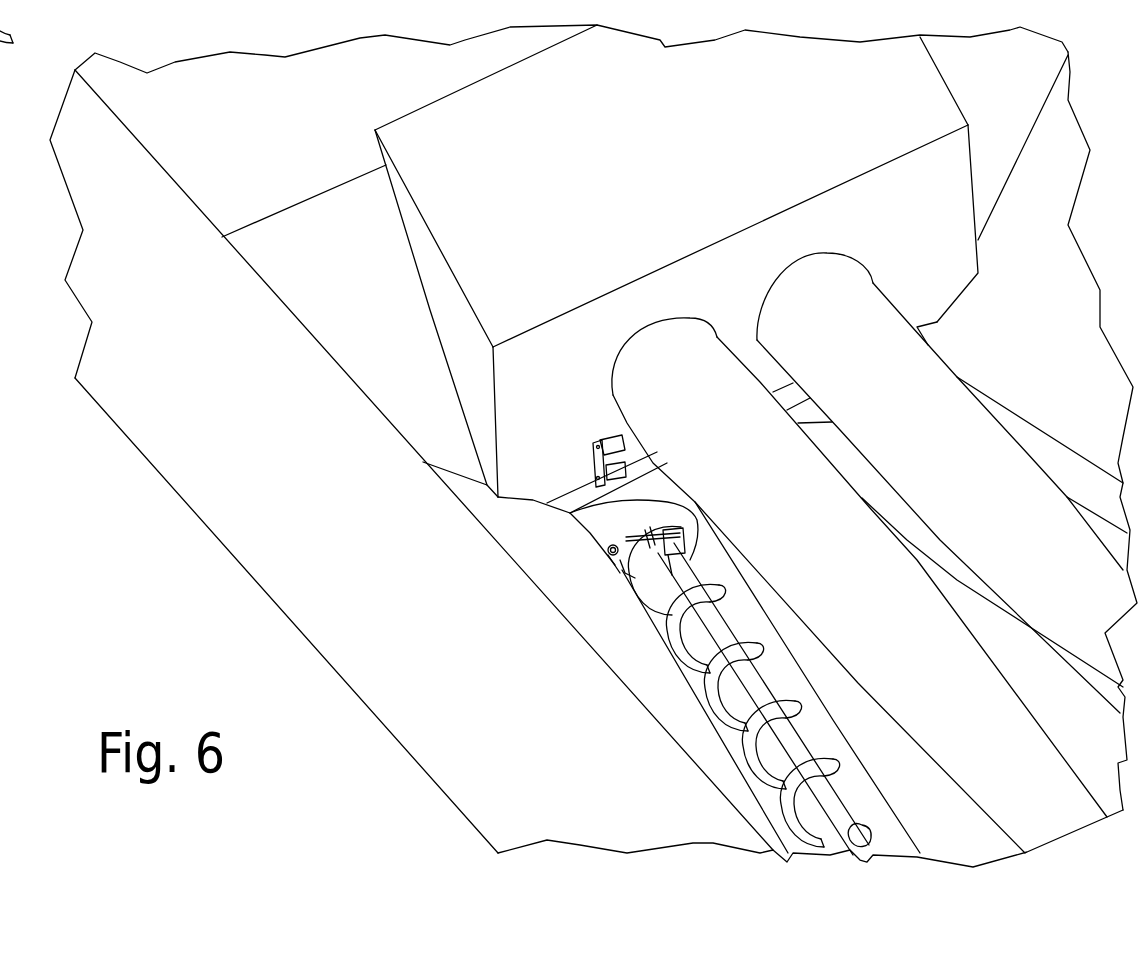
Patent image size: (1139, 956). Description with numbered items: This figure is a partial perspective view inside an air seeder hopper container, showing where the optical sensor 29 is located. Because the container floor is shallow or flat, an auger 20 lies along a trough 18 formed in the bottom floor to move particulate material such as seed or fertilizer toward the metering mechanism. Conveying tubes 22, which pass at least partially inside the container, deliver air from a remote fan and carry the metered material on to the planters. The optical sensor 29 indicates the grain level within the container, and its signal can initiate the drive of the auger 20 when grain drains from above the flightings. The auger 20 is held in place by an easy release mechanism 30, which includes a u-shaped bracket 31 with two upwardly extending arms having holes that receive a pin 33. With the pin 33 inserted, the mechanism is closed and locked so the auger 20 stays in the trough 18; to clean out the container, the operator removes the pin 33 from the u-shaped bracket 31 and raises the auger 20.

The conveying tubes 22 is at (643, 343).
The optical sensor 29 is at (592, 470).
The trough 18 is at (632, 500).
The u-shaped bracket 31 is at (617, 548).
The easy release mechanism 30 is at (597, 575).
The pin 33 is at (623, 575).
The auger 20 is at (740, 745).